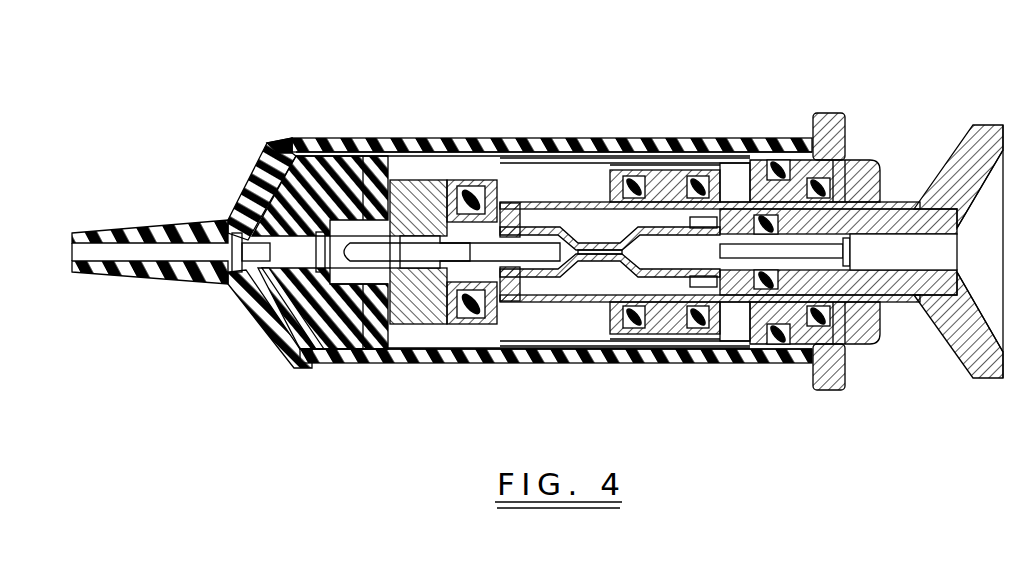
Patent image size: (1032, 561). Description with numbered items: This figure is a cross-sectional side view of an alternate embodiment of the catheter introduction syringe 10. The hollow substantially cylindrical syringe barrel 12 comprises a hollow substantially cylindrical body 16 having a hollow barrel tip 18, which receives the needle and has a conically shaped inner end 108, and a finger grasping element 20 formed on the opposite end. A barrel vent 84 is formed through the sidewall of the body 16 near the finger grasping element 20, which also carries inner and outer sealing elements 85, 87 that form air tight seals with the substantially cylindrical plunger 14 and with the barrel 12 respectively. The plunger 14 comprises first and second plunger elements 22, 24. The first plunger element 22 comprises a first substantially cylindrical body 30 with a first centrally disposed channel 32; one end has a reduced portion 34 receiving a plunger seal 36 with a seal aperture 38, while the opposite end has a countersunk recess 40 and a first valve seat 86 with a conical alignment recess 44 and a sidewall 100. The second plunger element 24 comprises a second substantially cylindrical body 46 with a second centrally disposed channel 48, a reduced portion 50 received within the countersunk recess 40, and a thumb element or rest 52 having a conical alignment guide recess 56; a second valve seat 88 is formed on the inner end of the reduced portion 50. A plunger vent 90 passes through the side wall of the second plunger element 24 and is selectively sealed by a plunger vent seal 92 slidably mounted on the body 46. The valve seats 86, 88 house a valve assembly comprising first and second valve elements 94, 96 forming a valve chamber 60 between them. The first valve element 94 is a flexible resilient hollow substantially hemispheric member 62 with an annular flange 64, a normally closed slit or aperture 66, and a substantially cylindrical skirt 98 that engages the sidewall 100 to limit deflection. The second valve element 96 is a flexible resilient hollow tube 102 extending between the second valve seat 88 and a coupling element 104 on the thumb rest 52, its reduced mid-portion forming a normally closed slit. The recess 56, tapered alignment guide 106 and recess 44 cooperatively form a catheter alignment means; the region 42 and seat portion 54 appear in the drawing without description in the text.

The catheter introduction syringe 10 is at (388, 135).
The hollow substantially cylindrical syringe barrel 12 is at (664, 132).
The substantially cylindrical plunger 14 is at (950, 160).
The hollow substantially cylindrical body 16 is at (410, 138).
The hollow barrel tip 18 is at (135, 232).
The finger grasping element 20 is at (826, 113).
The first plunger element 22 is at (418, 138).
The second plunger element 24 is at (558, 138).
The first substantially cylindrical body 30 is at (425, 362).
The first centrally disposed channel 32 is at (300, 268).
The reduced portion 34 is at (345, 362).
The plunger seal 36 is at (300, 360).
The seal aperture 38 is at (268, 252).
The countersunk recess 40 is at (497, 262).
The end block 42 is at (330, 138).
The conical alignment recess 44 is at (262, 158).
The second substantially cylindrical body 46 is at (745, 362).
The second centrally disposed channel 48 is at (832, 392).
The reduced portion 50 is at (440, 138).
The thumb element or rest 52 is at (1003, 125).
The inner tube 54 is at (520, 362).
The conical alignment guide recess 56 is at (992, 205).
The valve chamber 60 is at (505, 362).
The flexible resilient hollow substantially hemispheric member 62 is at (285, 140).
The annular flange 64 is at (395, 362).
The normally closed centrally disposed slit or aperture 66 is at (285, 330).
The barrel vent 84 is at (718, 362).
The inner sealing element 85 is at (842, 160).
The first valve seat 86 is at (320, 362).
The outer sealing element 87 is at (768, 160).
The second valve seat 88 is at (500, 138).
The plunger vent 90 is at (560, 138).
The plunger vent seal 92 is at (640, 340).
The first valve element 94 is at (350, 138).
The second valve element 96 is at (600, 282).
The substantially cylindrical skirt 98 is at (362, 362).
The sidewall 100 is at (370, 138).
The flexible resilient hollow tube 102 is at (650, 138).
The coupling element 104 is at (682, 138).
The tapered alignment guide 106 is at (830, 258).
The conically shaped inner end 108 is at (238, 212).